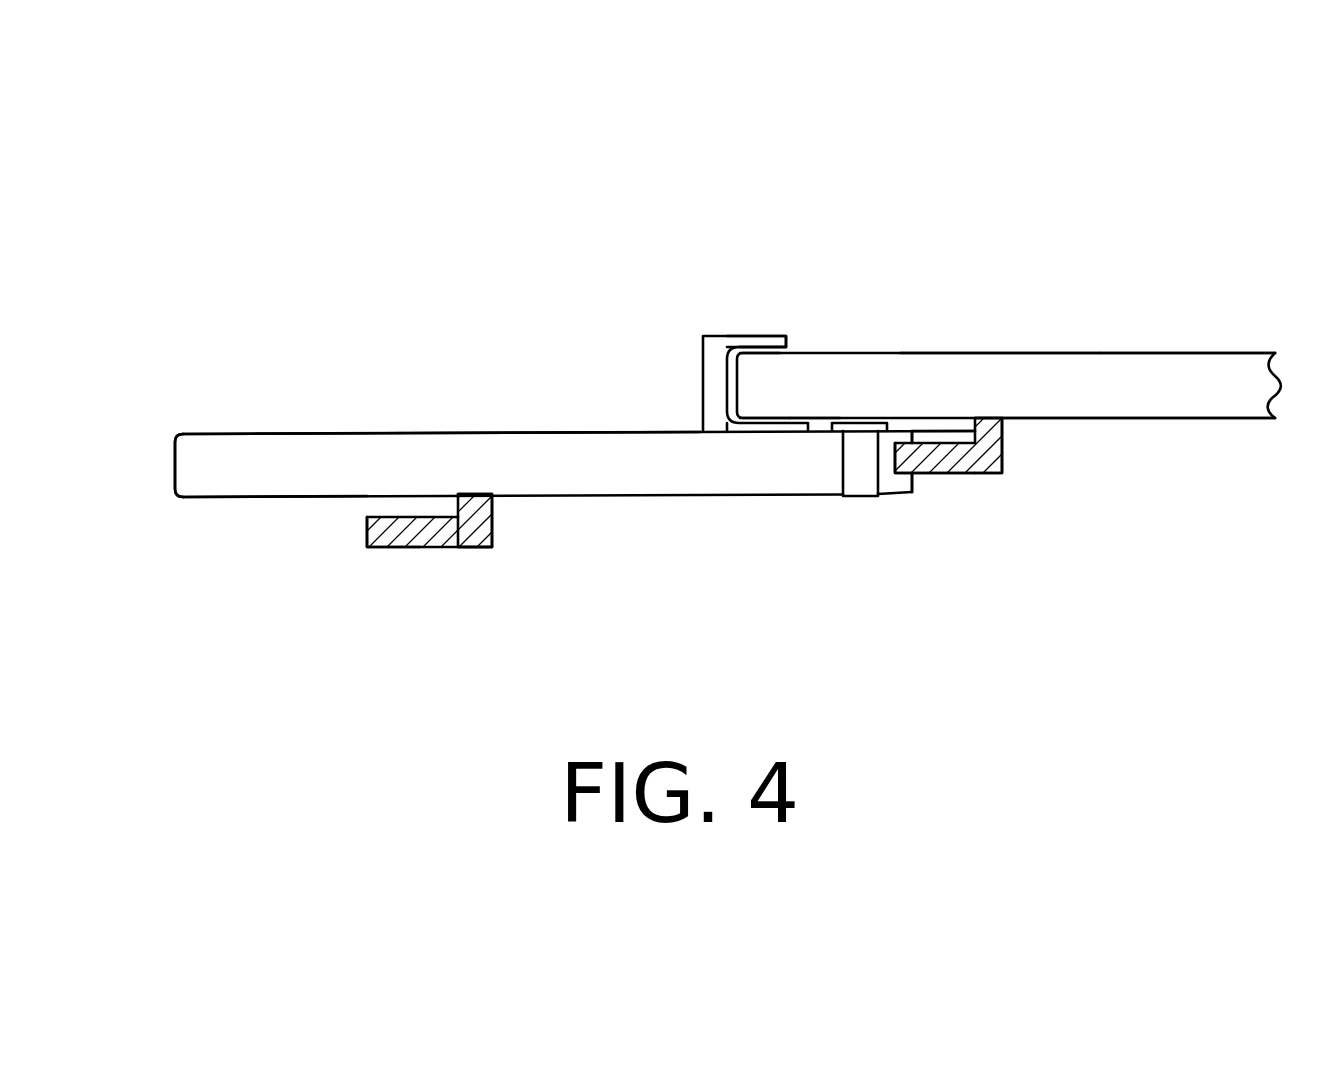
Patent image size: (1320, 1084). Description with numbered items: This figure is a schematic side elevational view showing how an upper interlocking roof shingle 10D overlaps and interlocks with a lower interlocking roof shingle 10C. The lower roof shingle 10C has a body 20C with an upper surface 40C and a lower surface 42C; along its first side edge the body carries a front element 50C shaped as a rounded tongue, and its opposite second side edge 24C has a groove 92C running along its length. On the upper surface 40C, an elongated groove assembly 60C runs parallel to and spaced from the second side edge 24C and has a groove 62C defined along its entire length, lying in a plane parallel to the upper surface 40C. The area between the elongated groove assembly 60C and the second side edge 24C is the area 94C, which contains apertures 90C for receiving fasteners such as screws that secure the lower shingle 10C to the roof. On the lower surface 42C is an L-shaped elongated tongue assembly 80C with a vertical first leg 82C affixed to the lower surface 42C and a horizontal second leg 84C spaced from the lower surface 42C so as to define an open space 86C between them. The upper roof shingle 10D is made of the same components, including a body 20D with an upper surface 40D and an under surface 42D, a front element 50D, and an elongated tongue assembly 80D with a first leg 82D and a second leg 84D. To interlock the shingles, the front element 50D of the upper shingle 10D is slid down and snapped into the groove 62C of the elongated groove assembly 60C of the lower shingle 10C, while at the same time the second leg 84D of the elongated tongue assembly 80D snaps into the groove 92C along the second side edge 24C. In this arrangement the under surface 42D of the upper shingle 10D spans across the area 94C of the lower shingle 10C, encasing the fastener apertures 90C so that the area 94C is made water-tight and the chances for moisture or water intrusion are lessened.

The lower interlocking roof shingle 10C is at (408, 423).
The body 20C is at (505, 423).
The upper surface 40C is at (232, 427).
The lower surface 42C is at (213, 498).
The front element 50C is at (150, 438).
The second side edge 24C is at (908, 495).
The groove 92C is at (913, 477).
The aperture 90C is at (858, 463).
The elongated tongue assembly 80C is at (410, 548).
The first leg 82C is at (493, 537).
The second leg 84C is at (467, 548).
The open area or space 86C is at (378, 523).
The elongated groove assembly 60C is at (715, 333).
The groove 62C is at (792, 345).
The front element 50D is at (790, 347).
The area 94C is at (813, 416).
The upper interlocking roof shingle 10D is at (1015, 337).
The body 20D is at (1175, 353).
The upper surface 40D is at (1063, 352).
The under surface 42D is at (1094, 418).
The elongated tongue assembly 80D is at (952, 477).
The first leg 82D is at (1003, 455).
The second leg 84D is at (923, 477).